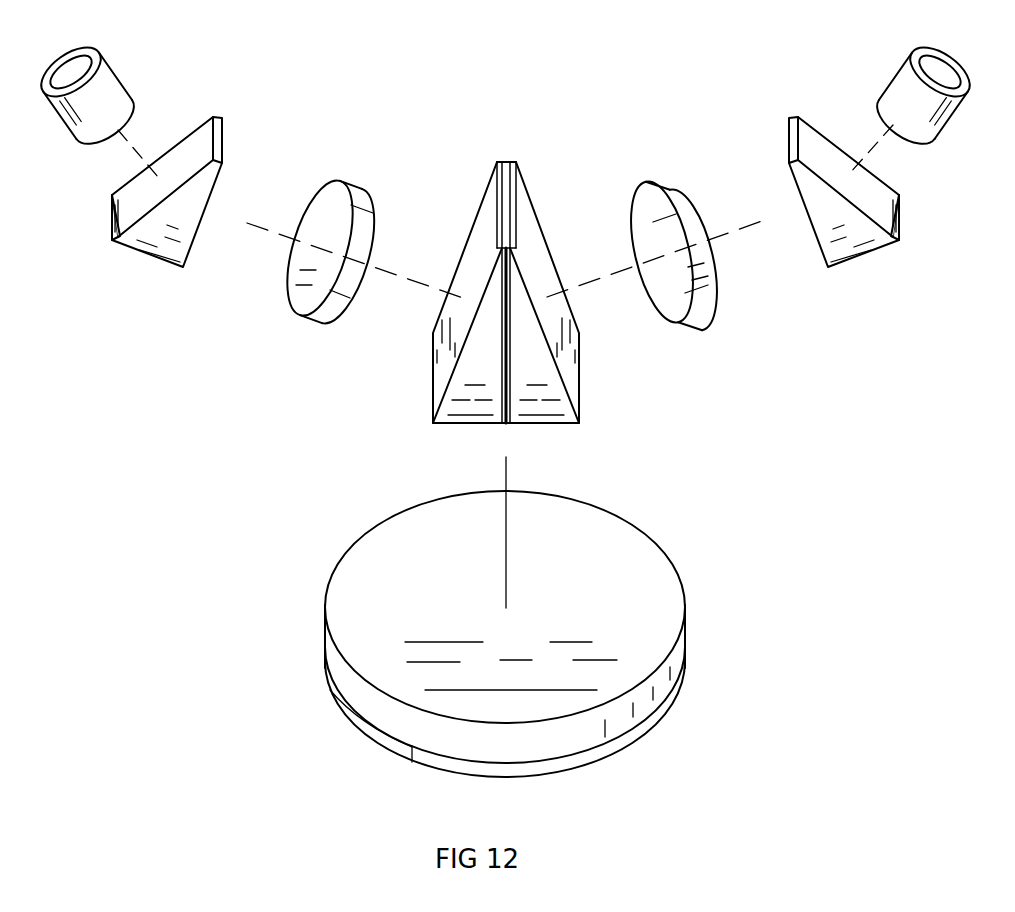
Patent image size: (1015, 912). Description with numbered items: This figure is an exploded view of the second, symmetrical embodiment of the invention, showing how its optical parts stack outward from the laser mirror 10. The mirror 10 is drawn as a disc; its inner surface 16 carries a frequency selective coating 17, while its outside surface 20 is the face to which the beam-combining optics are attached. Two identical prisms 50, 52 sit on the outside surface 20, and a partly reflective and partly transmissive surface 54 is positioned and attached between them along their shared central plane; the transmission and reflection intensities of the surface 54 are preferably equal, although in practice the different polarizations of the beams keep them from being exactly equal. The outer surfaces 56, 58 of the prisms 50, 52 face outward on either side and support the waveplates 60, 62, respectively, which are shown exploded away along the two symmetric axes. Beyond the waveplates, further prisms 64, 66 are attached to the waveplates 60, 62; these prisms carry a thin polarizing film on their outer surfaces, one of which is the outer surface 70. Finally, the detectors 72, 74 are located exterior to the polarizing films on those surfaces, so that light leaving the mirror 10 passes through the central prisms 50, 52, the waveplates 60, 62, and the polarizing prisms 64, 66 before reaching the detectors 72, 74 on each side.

The laser mirror 10 is at (557, 737).
The inner surface 16 is at (470, 762).
The frequency selective coating 17 is at (630, 737).
The outside surface 20 is at (612, 612).
The prism 50 is at (472, 418).
The prism 52 is at (538, 418).
The partly reflective and partly transmissive surface 54 is at (506, 180).
The outer surface 56 is at (482, 243).
The outer surface 58 is at (533, 245).
The waveplate 60 is at (360, 193).
The waveplate 62 is at (648, 187).
The prism 64 is at (158, 257).
The prism 66 is at (867, 247).
The outer surface 70 is at (133, 188).
The detector 72 is at (110, 83).
The detector 74 is at (893, 77).